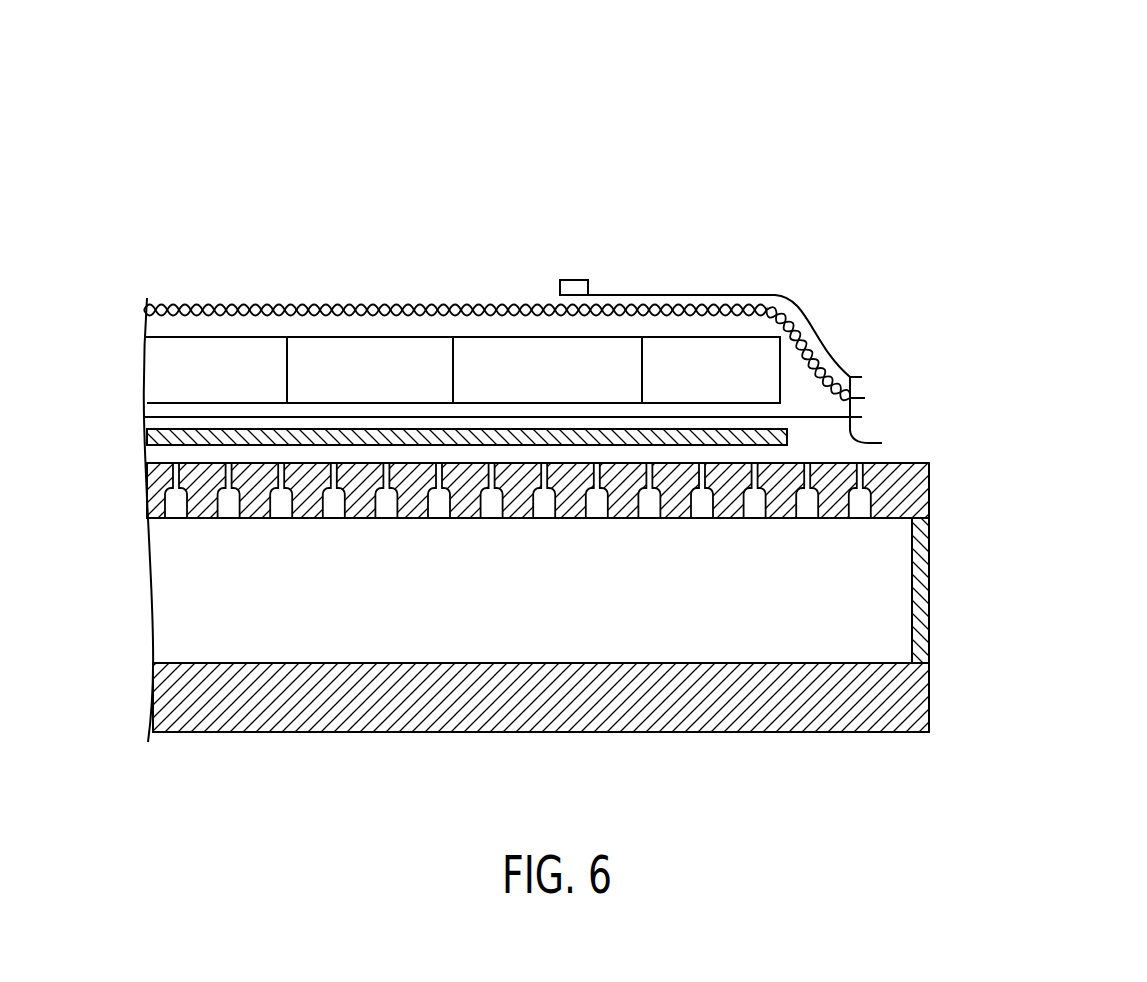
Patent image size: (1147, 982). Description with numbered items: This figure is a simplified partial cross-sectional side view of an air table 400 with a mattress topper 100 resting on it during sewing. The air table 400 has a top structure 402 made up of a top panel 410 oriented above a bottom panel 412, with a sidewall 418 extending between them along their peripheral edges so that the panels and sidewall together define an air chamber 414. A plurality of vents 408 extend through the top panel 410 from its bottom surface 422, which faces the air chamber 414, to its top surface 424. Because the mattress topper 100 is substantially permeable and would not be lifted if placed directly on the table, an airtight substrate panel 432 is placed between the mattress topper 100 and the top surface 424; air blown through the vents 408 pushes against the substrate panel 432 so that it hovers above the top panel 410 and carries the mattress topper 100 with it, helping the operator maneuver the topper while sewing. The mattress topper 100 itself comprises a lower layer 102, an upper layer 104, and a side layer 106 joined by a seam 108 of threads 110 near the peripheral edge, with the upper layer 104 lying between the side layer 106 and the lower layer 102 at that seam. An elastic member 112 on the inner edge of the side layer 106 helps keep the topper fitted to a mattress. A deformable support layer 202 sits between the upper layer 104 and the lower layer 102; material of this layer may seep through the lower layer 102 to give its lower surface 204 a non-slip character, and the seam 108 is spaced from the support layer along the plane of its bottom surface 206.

The mattress topper 100 is at (673, 92).
The lower layer 102 is at (147, 421).
The upper layer 104 is at (183, 306).
The side layer 106 is at (640, 295).
The seam 108 is at (856, 346).
The threads 110 is at (881, 416).
The elastic member 112 is at (578, 280).
The deformable support layer 202 is at (375, 355).
The lower surface 204 is at (220, 424).
The bottom surface 206 is at (266, 414).
The air table 400 is at (126, 576).
The top structure 402 is at (1058, 578).
The vents 408 is at (272, 531).
The top panel 410 is at (931, 466).
The bottom panel 412 is at (913, 717).
The air chamber 414 is at (878, 630).
The sidewall 418 is at (921, 647).
The bottom surface 422 is at (892, 536).
The top surface 424 is at (927, 444).
The substrate panel 432 is at (707, 438).